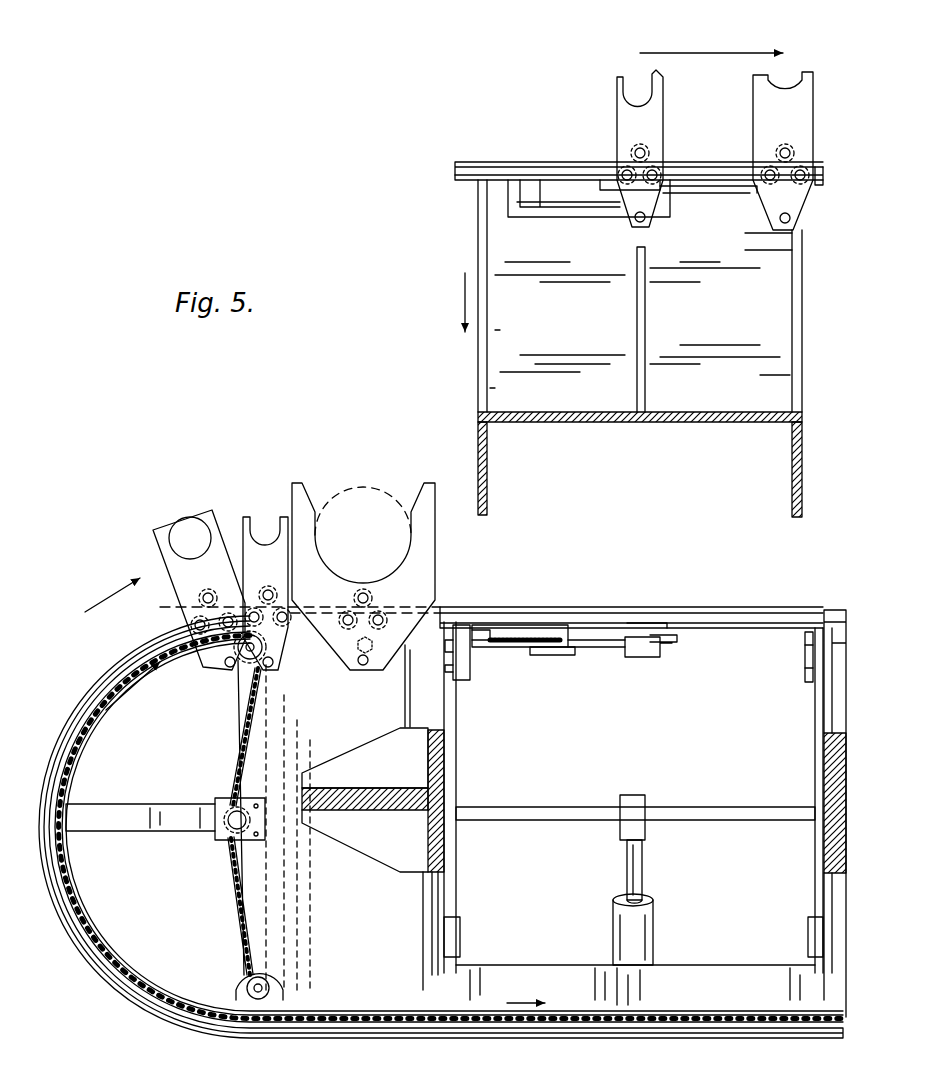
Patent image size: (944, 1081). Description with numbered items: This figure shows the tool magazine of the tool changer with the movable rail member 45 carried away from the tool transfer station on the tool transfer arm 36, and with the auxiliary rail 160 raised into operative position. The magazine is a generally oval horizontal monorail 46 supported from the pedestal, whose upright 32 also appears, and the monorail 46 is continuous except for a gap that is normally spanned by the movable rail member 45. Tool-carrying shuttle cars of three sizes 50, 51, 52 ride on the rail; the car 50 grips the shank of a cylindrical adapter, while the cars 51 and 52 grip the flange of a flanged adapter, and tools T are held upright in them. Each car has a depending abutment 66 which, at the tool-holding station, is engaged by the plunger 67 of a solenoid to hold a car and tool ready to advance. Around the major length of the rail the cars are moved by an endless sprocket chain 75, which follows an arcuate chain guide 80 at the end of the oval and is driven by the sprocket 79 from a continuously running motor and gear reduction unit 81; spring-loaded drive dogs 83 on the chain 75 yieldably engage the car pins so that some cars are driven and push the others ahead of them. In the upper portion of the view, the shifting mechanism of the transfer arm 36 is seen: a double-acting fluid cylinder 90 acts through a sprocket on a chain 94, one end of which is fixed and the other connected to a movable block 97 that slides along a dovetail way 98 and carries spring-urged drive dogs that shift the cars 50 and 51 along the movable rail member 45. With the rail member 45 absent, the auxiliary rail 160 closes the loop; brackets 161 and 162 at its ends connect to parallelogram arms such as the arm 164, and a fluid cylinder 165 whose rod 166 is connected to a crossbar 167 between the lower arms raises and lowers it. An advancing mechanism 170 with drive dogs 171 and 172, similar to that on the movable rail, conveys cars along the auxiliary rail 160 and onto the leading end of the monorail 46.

The upright 32 is at (348, 760).
The tool transfer arm 36 is at (478, 375).
The movable rail member 45 is at (551, 168).
The horizontal monorail 46 is at (443, 606).
The shuttle car 50 is at (645, 118).
The shuttle car 51 is at (766, 144).
The shuttle car 52 is at (437, 544).
The depending abutment 66 is at (345, 652).
The plunger 67 is at (378, 648).
The endless sprocket chain 75 is at (247, 724).
The sprocket 79 is at (256, 985).
The arcuate chain guide 80 is at (66, 792).
The motor and gear reduction unit 81 is at (272, 970).
The drive dog 83 is at (146, 640).
The double-acting fluid cylinder 90 is at (565, 193).
The chain 94 is at (555, 652).
The movable block 97 is at (698, 180).
The dovetail way 98 is at (493, 178).
The auxiliary rail 160 is at (757, 610).
The bracket 161 is at (468, 655).
The bracket 162 is at (805, 660).
The arm 164 is at (456, 753).
The fluid cylinder 165 is at (655, 921).
The rod 166 is at (642, 862).
The crossbar 167 is at (675, 807).
The advancing mechanism 170 is at (590, 668).
The drive dog 171 is at (500, 624).
The drive dog 172 is at (640, 628).
The tool T is at (797, 68).